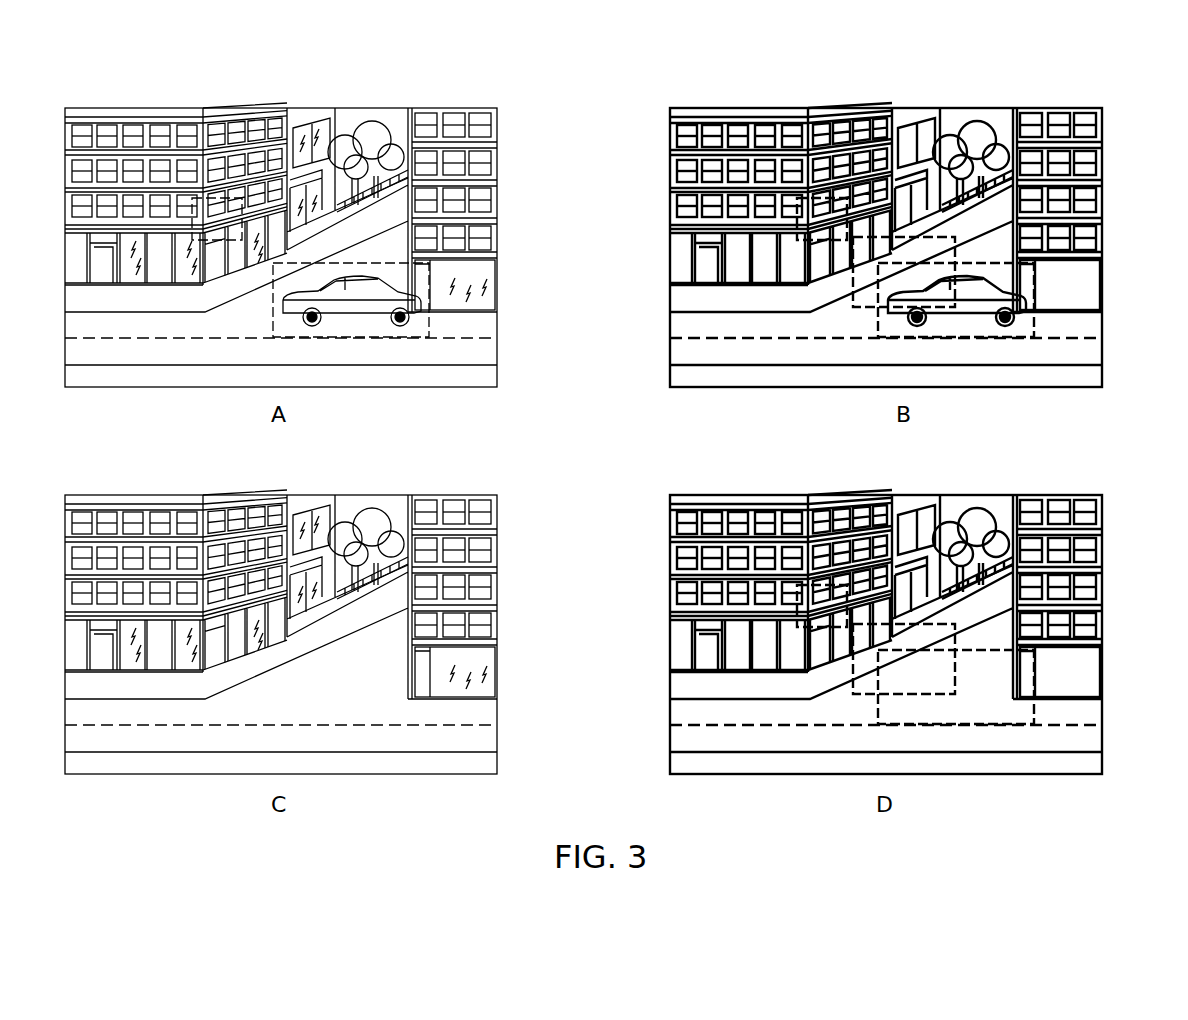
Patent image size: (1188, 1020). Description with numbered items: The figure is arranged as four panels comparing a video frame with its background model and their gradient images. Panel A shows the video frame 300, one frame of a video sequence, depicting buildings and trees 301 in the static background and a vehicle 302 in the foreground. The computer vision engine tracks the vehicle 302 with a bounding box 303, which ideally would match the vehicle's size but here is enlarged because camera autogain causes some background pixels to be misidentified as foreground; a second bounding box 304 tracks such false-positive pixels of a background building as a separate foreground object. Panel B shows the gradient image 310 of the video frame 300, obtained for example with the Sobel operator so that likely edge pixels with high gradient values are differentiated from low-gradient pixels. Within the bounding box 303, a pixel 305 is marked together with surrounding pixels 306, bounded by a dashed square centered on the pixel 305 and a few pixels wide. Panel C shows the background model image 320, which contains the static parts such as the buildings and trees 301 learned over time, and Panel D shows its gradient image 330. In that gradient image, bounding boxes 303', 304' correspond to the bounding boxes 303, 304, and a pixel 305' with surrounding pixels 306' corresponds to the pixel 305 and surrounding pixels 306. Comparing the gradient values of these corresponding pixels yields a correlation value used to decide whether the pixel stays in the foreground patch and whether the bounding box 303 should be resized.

The video frame 300 is at (318, 108).
The buildings and trees 301 is at (390, 125).
The vehicle 302 is at (366, 318).
The bounding box 303 is at (787, 285).
The bounding box 304 is at (516, 312).
The pixel 305 is at (888, 161).
The surrounding pixels 306 is at (896, 337).
The gradient image 310 is at (1055, 108).
The background model image 320 is at (318, 495).
The gradient image 330 is at (856, 495).
The bounding box 303' is at (1093, 672).
The bounding box 304' is at (819, 700).
The pixel 305' is at (952, 583).
The surrounding pixels 306' is at (899, 735).